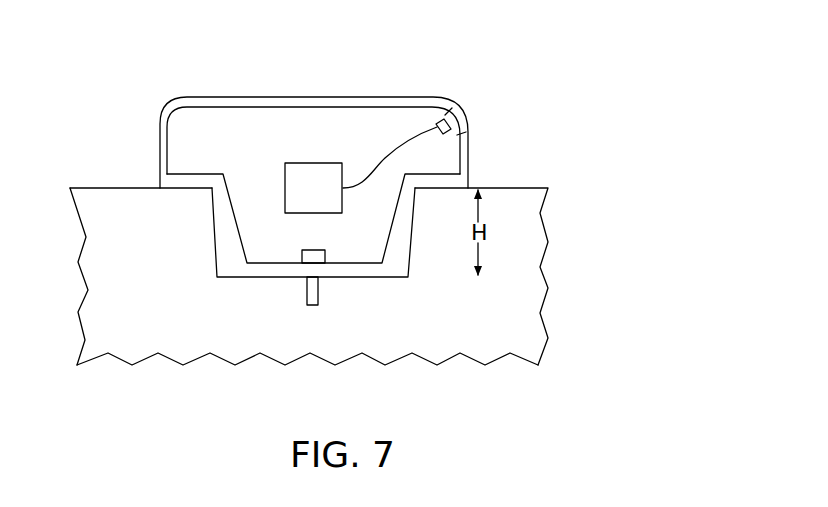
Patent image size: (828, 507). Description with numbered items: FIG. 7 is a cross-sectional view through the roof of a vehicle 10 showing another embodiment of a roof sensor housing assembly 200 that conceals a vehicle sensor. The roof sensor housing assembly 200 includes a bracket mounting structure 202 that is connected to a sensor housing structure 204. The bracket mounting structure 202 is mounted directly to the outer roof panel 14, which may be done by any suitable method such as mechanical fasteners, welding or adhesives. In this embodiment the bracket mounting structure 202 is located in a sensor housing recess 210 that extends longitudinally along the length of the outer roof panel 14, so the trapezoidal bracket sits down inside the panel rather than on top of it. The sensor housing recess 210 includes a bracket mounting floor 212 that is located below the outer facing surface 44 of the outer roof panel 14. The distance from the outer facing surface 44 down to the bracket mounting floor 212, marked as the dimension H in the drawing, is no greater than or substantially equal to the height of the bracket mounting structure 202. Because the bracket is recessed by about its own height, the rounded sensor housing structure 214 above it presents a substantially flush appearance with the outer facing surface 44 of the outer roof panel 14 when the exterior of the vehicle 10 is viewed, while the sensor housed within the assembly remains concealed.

The vehicle 10 is at (635, 177).
The outer roof panel 14 is at (560, 252).
The outer facing surface 44 is at (125, 187).
The roof sensor housing assembly 200 is at (520, 85).
The bracket mounting structure 202 is at (530, 167).
The sensor housing structure 204 is at (175, 107).
The sensor housing recess 210 is at (212, 278).
The bracket mounting floor 212 is at (390, 278).
The sensor housing structure 214 is at (325, 96).